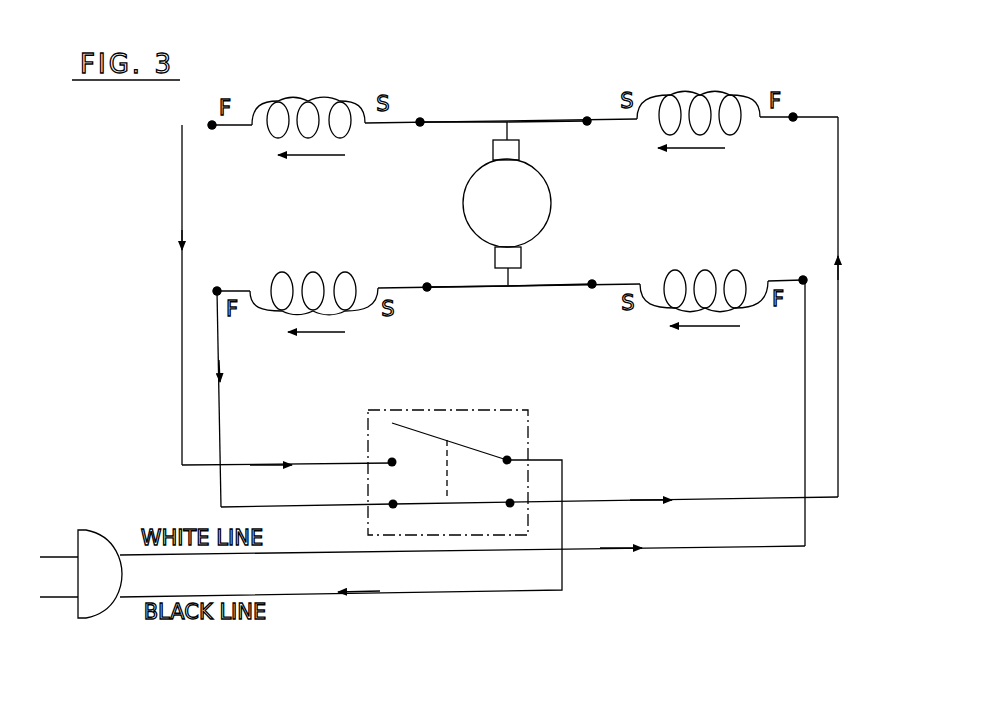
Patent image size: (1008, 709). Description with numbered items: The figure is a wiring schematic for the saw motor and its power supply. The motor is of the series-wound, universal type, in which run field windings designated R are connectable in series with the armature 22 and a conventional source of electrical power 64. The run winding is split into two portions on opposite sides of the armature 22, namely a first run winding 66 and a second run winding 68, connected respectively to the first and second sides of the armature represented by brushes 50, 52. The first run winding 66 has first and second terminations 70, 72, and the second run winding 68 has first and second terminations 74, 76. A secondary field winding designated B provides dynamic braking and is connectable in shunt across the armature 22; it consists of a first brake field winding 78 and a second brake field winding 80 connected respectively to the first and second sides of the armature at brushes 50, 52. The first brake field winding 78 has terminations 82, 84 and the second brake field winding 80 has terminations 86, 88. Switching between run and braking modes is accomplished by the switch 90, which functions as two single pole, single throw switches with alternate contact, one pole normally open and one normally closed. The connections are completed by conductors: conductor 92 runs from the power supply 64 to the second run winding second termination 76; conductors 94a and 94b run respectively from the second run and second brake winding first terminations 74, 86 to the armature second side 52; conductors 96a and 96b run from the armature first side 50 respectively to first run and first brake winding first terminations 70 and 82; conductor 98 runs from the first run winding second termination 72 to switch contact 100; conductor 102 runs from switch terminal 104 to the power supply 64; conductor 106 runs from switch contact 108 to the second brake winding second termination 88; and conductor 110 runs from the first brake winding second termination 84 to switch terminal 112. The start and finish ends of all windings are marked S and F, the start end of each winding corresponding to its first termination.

The armature 22 is at (463, 201).
The brush 50 is at (493, 151).
The brush 52 is at (497, 260).
The source of electrical power 64 is at (95, 531).
The first run winding 66 is at (274, 101).
The second run winding 68 is at (676, 270).
The first termination of first run winding 70 is at (420, 121).
The second termination of first run winding 72 is at (212, 125).
The first termination of second run winding 74 is at (592, 284).
The second termination of second run winding 76 is at (803, 280).
The first brake field winding 78 is at (672, 95).
The second brake field winding 80 is at (282, 272).
The first termination of first brake field winding 82 is at (587, 121).
The second termination of first brake field winding 84 is at (793, 117).
The first termination of second brake field winding 86 is at (427, 287).
The second termination of second brake field winding 88 is at (217, 291).
The switch 90 is at (437, 406).
The conductor 92 is at (700, 548).
The conductor 94a is at (548, 285).
The conductor 94b is at (458, 287).
The conductor 96a is at (463, 121).
The conductor 96b is at (552, 121).
The conductor 98 is at (182, 192).
The switch contact 100 is at (392, 462).
The conductor 102 is at (447, 592).
The switch terminal 104 is at (507, 460).
The conductor 106 is at (221, 490).
The switch contact 108 is at (393, 504).
The conductor 110 is at (838, 185).
The switch terminal 112 is at (510, 503).